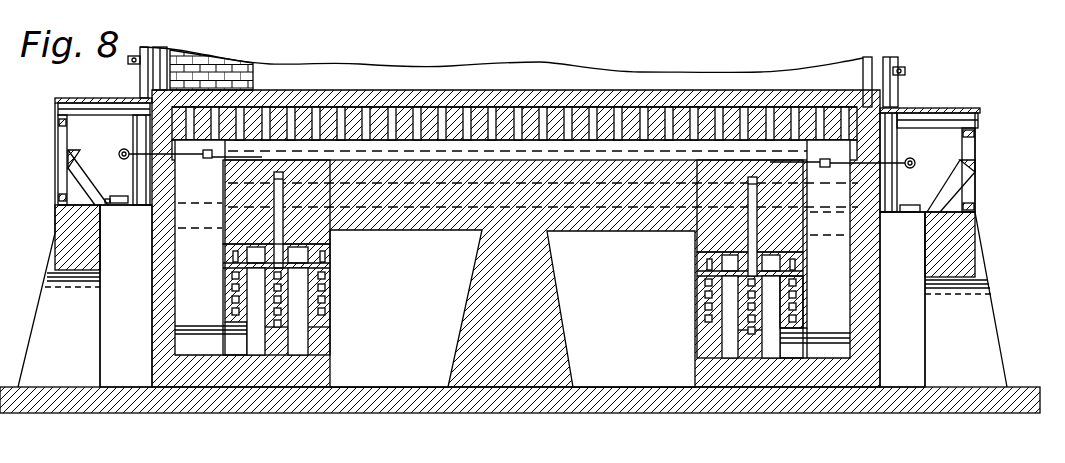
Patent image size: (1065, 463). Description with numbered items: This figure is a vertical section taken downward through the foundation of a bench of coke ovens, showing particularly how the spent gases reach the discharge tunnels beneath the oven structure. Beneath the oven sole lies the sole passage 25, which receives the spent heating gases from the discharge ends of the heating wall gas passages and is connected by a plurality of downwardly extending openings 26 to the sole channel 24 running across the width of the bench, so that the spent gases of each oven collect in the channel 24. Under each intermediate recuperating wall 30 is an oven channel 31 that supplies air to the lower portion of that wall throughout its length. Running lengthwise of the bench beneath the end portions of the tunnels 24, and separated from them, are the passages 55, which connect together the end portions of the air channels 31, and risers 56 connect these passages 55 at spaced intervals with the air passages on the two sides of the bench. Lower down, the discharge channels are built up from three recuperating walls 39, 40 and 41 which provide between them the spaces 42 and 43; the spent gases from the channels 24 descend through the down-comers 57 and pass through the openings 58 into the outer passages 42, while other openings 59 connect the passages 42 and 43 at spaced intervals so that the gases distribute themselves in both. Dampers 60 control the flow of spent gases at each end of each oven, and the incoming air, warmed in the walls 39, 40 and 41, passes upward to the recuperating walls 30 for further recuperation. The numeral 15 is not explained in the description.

The air passage 15 is at (147, 255).
The sole channel 24 is at (627, 148).
The sole passage 25 is at (483, 110).
The downwardly extending openings 26 is at (573, 142).
The recuperating wall 30 is at (520, 425).
The oven channel 31 is at (460, 173).
The recuperating wall 39 is at (782, 317).
The recuperating wall 40 is at (698, 347).
The recuperating wall 41 is at (695, 307).
The outer passage 42 is at (767, 288).
The passage 43 is at (697, 323).
The passage 55 is at (215, 176).
The riser 56 is at (277, 233).
The down-comer 57 is at (193, 290).
The opening 58 is at (230, 347).
The opening 59 is at (279, 350).
The damper 60 is at (223, 156).